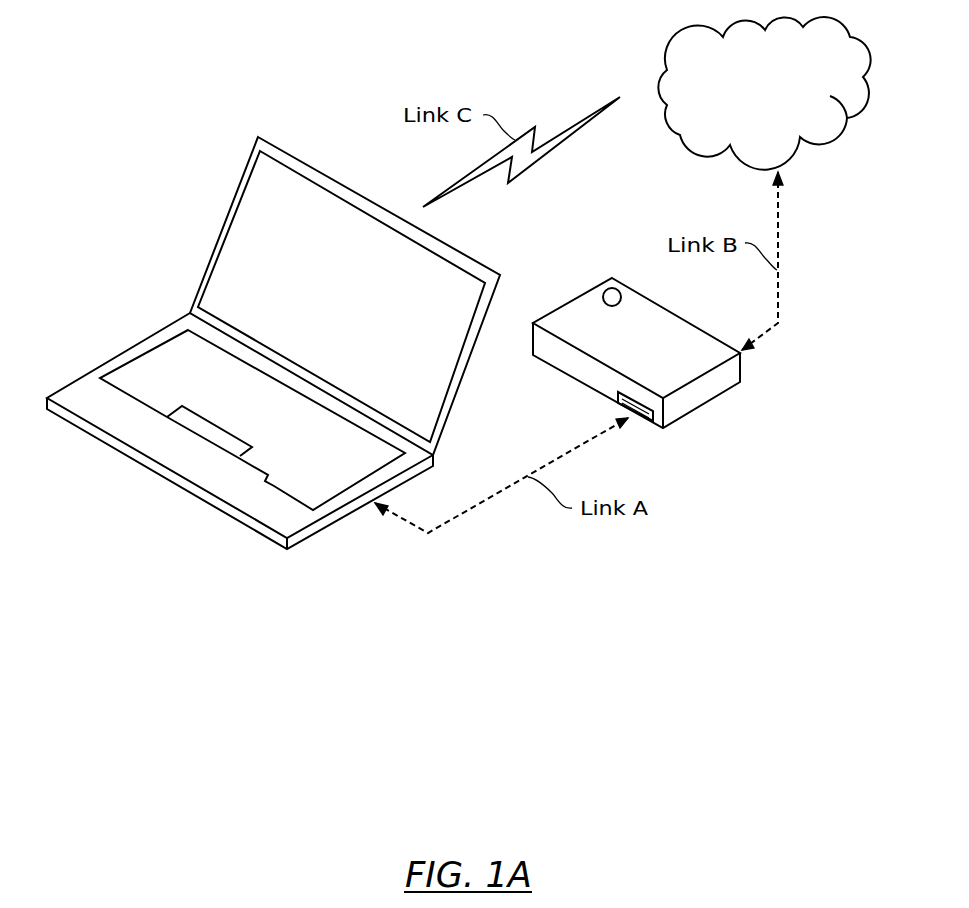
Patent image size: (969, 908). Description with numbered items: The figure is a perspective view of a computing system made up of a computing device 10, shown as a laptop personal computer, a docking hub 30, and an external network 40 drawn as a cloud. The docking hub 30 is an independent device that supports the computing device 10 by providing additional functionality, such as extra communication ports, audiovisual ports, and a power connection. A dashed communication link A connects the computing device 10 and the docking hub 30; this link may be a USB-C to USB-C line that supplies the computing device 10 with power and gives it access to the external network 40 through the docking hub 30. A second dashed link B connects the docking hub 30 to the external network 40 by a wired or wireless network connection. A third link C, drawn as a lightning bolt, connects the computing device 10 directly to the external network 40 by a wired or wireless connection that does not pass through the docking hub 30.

The computing device 10 is at (207, 265).
The docking hub 30 is at (587, 292).
The external network 40 is at (765, 100).